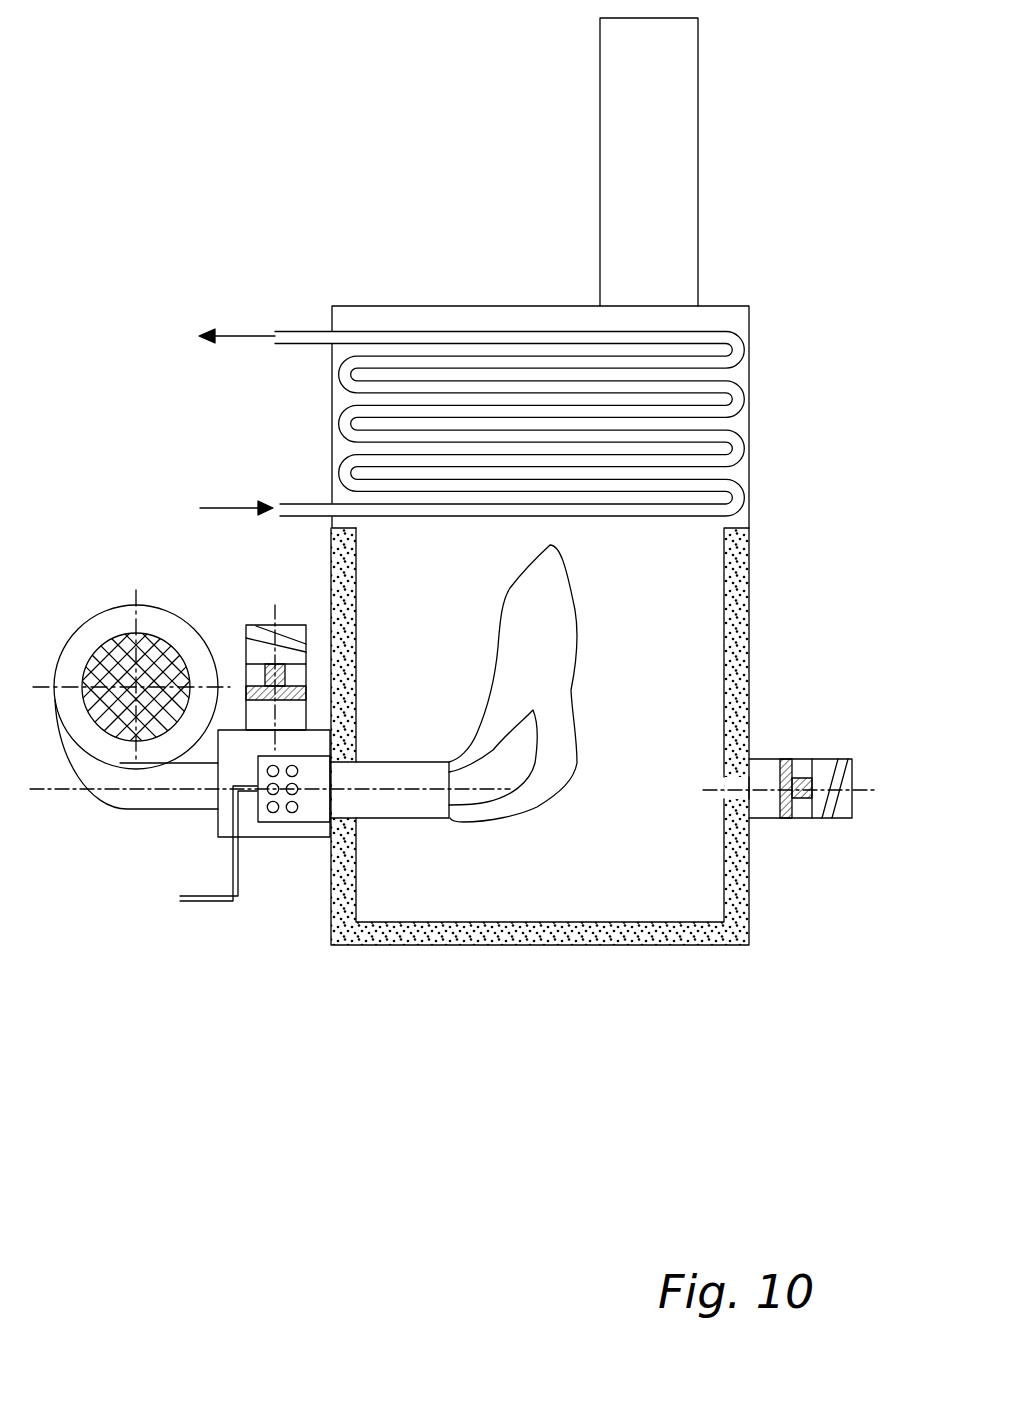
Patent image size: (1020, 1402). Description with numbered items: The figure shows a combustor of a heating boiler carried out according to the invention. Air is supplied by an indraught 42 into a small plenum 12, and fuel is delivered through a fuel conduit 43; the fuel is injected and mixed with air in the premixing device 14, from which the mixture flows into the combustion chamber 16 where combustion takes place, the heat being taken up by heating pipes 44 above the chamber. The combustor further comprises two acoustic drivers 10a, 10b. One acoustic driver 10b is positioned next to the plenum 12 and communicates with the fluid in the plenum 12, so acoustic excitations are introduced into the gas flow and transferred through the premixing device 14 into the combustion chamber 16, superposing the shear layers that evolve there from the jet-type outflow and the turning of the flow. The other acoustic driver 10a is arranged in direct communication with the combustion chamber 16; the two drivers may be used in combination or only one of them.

The acoustic driver 10a is at (804, 807).
The acoustic driver 10b is at (263, 653).
The small plenum 12 is at (247, 813).
The premixing device 14 is at (394, 805).
The combustion chamber 16 is at (597, 889).
The indraught 42 is at (128, 622).
The fuel conduit 43 is at (193, 893).
The heating pipes 44 is at (737, 498).